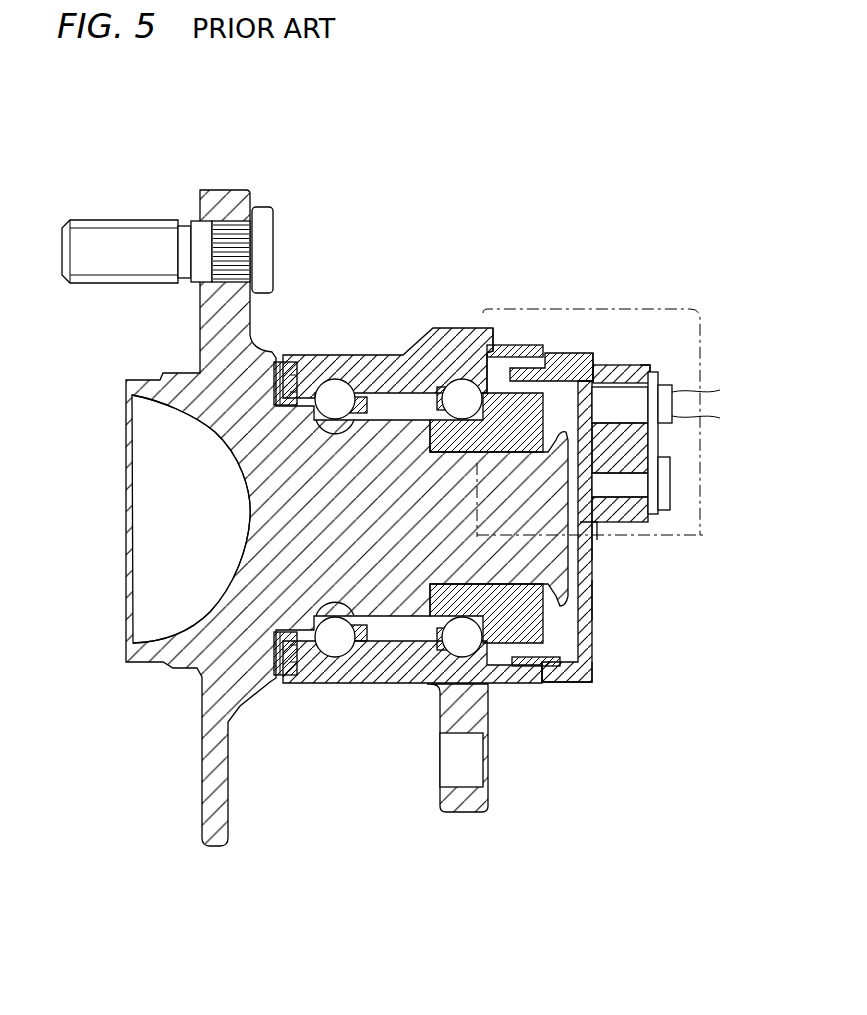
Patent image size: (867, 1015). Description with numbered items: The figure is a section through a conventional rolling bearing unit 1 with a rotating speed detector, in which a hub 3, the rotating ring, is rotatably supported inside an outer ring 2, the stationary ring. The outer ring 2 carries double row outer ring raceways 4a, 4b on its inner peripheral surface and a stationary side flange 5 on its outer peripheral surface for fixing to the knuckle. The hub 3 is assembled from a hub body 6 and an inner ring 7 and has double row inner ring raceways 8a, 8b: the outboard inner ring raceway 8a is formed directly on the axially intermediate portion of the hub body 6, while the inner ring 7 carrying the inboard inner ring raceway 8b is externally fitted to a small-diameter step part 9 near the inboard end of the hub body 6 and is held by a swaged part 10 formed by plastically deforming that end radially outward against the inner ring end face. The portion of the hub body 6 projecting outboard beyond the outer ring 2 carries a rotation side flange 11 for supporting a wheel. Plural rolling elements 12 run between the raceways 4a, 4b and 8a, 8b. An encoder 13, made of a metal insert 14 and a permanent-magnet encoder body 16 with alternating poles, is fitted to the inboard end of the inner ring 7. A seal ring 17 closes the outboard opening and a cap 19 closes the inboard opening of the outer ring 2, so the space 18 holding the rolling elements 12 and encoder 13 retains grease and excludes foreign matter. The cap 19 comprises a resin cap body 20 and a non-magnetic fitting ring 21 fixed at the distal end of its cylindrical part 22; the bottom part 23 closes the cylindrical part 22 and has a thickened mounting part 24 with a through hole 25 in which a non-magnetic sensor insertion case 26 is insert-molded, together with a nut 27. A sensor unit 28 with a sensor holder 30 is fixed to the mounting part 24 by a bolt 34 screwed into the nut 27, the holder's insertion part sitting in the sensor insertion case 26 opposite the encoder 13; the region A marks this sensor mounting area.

The rolling bearing unit 1 is at (192, 206).
The outer ring 2 is at (380, 355).
The hub 3 is at (215, 418).
The outer ring raceway 4a is at (347, 392).
The outer ring raceway 4b is at (447, 418).
The stationary side flange 5 is at (458, 810).
The hub body 6 is at (232, 437).
The inner ring 7 is at (496, 345).
The inner ring raceway 8a is at (300, 668).
The inner ring raceway 8b is at (443, 600).
The small-diameter step part 9 is at (378, 630).
The swaged part 10 is at (592, 592).
The rotation side flange 11 is at (228, 190).
The rolling elements 12 is at (331, 386).
The encoder 13 is at (613, 366).
The metal insert 14 is at (530, 350).
The encoder body 16 is at (584, 369).
The seal ring 17 is at (281, 360).
The space 18 is at (372, 660).
The cap 19 is at (592, 560).
The cap body 20 is at (592, 646).
The fitting ring 21 is at (548, 672).
The cylindrical part 22 is at (560, 354).
The bottom part 23 is at (592, 540).
The mounting part 24 is at (647, 370).
The through hole 25 is at (660, 388).
The sensor insertion case 26 is at (650, 414).
The nut 27 is at (645, 520).
The sensor unit 28 is at (652, 410).
The sensor holder 30 is at (666, 408).
The bolt 34 is at (661, 480).
The sensor region A is at (692, 308).